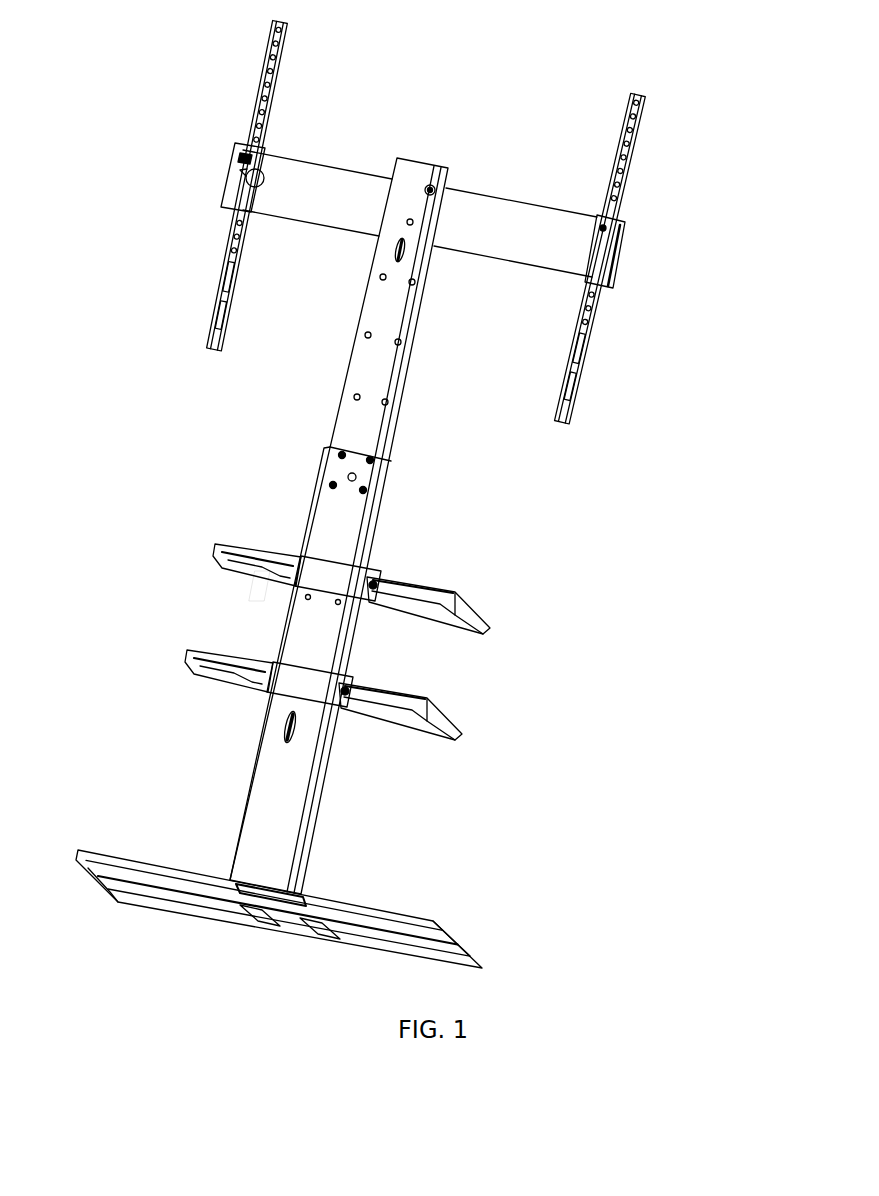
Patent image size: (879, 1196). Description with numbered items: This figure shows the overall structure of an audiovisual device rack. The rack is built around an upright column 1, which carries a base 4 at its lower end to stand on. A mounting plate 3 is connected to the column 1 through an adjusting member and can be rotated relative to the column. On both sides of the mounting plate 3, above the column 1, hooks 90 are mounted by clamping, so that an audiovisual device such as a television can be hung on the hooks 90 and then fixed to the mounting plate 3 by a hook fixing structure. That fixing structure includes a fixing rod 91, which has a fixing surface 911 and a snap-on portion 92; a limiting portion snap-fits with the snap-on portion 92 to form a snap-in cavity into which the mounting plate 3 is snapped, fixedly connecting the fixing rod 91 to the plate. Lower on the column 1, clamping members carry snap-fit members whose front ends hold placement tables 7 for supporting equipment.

The column 1 is at (348, 533).
The mounting plate 3 is at (500, 223).
The base 4 is at (382, 910).
The placement table 7 is at (448, 710).
The hook 90 is at (278, 100).
The fixing rod 91 is at (586, 233).
The fixing surface 911 is at (638, 140).
The snap-on portion 92 is at (622, 215).